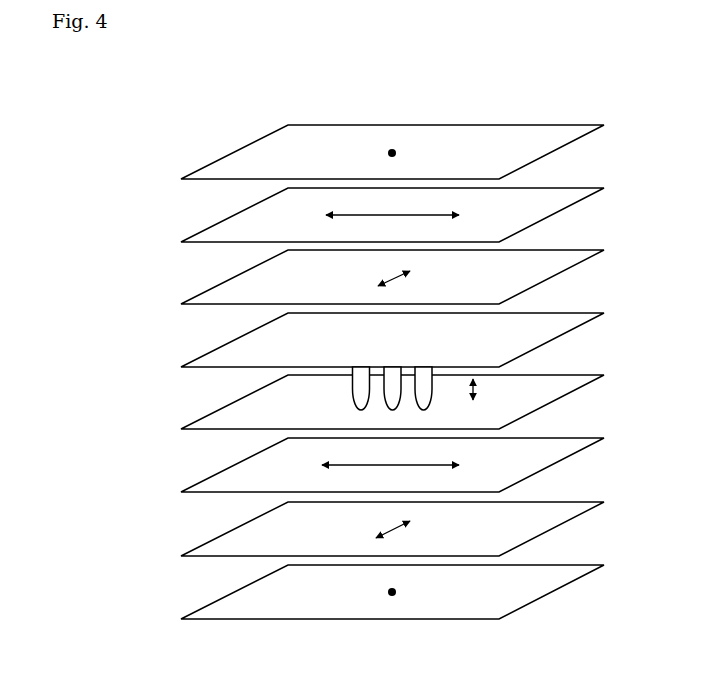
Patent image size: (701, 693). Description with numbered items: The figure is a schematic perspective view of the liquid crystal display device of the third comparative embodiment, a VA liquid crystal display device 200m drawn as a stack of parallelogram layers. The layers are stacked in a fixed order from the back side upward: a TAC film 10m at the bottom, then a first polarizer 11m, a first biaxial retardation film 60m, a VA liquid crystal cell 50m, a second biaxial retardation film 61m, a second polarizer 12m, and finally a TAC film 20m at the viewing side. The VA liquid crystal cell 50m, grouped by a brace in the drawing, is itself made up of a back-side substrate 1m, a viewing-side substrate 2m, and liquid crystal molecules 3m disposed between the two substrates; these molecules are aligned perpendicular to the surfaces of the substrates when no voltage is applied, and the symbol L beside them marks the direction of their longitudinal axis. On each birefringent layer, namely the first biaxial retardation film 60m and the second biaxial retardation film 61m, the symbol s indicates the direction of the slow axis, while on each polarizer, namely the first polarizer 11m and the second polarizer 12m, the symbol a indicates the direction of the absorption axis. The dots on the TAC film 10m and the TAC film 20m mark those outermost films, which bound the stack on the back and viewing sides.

The VA liquid crystal display device 200m is at (663, 92).
The TAC film 20m is at (538, 146).
The second polarizer 12m is at (413, 216).
The second biaxial retardation film 61m is at (411, 277).
The VA liquid crystal cell 50m is at (403, 367).
The viewing-side substrate 2m is at (220, 352).
The liquid crystal molecules 3m is at (358, 388).
The back-side substrate 1m is at (210, 418).
The direction of the longitudinal axis of the liquid crystal molecules L is at (478, 387).
The first biaxial retardation film 60m is at (416, 467).
The first polarizer 11m is at (415, 534).
The TAC film 10m is at (538, 586).